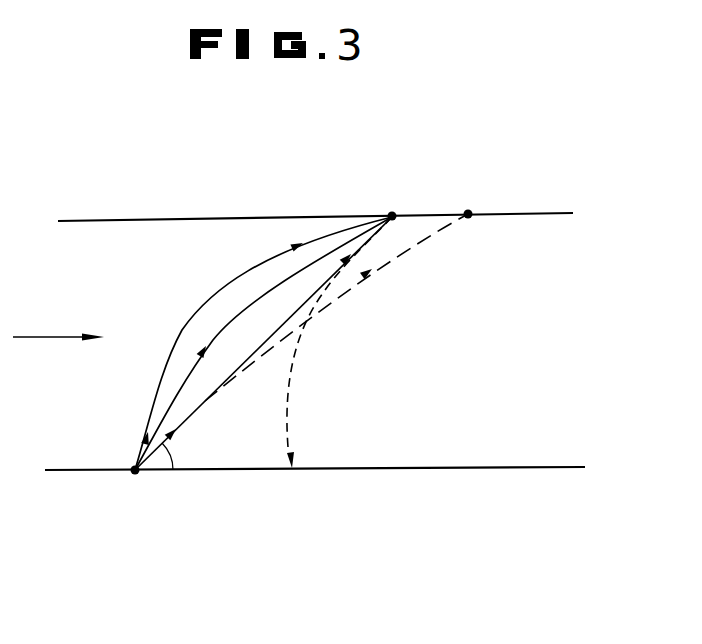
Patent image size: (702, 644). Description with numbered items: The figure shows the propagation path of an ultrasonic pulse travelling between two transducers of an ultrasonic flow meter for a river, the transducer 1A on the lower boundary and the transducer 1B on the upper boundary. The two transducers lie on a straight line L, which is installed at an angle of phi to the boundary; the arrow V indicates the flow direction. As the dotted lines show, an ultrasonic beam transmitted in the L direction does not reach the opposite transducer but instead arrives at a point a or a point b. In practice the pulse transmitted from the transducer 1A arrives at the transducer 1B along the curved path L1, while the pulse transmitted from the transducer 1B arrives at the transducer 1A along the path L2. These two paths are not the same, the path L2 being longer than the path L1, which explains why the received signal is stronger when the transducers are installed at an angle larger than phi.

The transducer 1A is at (139, 487).
The transducer 1B is at (386, 199).
The point a is at (337, 362).
The point b is at (475, 198).
The line L is at (301, 342).
The path L1 is at (264, 294).
The path L2 is at (240, 277).
The velocity vector V is at (131, 321).